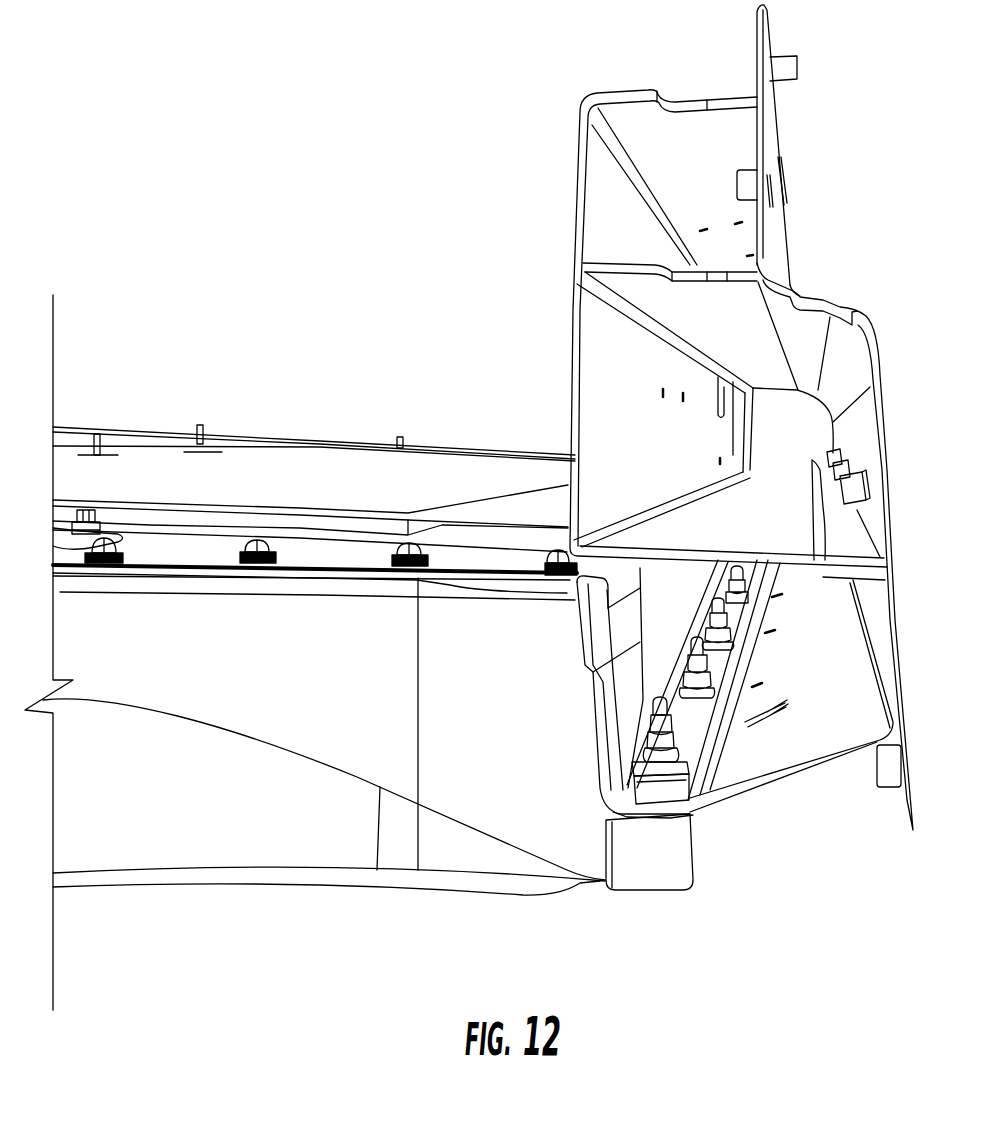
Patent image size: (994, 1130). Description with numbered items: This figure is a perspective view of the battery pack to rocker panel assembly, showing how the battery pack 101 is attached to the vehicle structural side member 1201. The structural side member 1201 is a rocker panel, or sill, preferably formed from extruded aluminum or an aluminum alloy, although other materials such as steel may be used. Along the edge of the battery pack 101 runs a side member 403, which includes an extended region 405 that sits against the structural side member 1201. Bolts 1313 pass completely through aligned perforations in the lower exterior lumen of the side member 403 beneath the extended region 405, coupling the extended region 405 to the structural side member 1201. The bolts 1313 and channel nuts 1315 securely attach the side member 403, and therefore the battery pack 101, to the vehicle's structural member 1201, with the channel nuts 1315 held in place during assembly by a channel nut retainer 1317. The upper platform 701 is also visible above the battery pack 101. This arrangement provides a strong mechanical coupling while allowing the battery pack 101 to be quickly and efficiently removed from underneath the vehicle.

The battery pack 101 is at (203, 818).
The mounting platform 701 is at (342, 476).
The vehicle structural side member 1201 is at (865, 302).
The side member 403 is at (602, 707).
The extended region 405 is at (667, 858).
The bolts 1313 is at (660, 712).
The channel nuts 1315 is at (670, 750).
The channel nut retainer 1317 is at (672, 724).